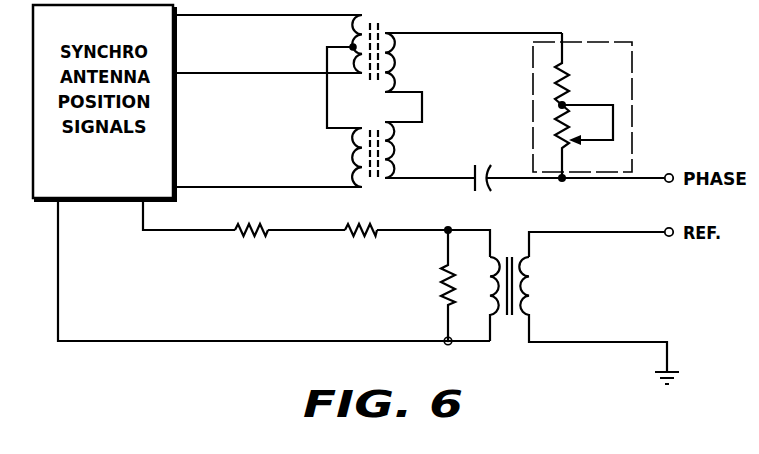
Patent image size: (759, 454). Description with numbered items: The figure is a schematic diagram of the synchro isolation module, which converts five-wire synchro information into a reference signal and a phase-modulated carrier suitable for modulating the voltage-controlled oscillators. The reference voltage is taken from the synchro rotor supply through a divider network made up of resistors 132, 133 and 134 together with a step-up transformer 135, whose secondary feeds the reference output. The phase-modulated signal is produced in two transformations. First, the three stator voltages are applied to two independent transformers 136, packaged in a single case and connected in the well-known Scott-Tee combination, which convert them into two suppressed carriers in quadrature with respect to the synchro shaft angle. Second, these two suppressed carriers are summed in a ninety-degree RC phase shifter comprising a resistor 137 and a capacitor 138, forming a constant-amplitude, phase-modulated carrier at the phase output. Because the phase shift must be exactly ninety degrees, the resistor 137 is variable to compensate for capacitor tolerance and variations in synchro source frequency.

The resistor 132 is at (442, 276).
The resistor 133 is at (238, 226).
The resistor 134 is at (357, 225).
The step-up transformer 135 is at (507, 256).
The transformers 136 is at (376, 27).
The resistor 137 is at (533, 84).
The capacitor 138 is at (474, 170).